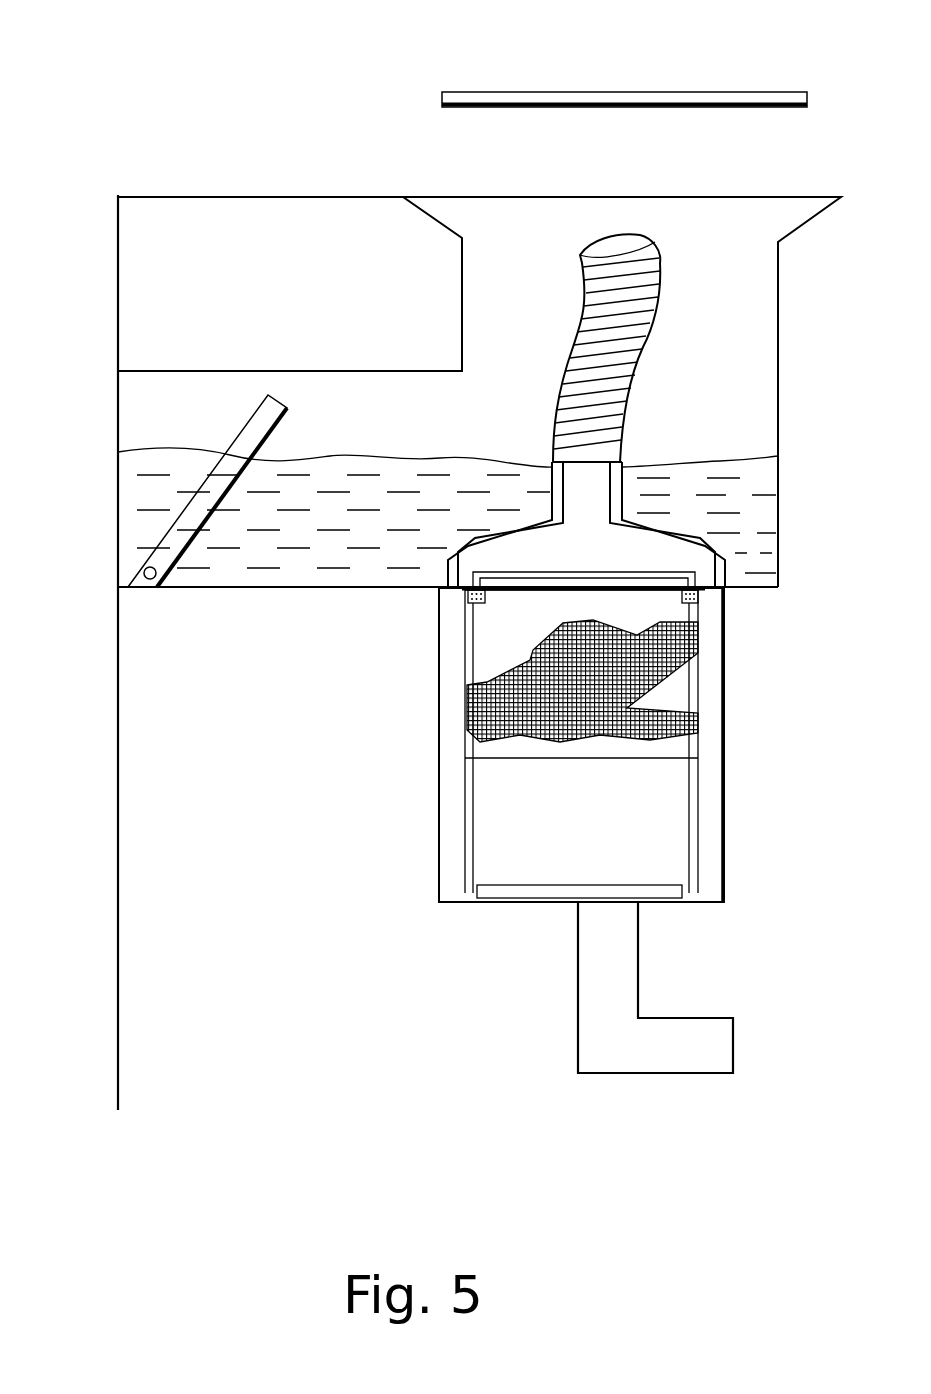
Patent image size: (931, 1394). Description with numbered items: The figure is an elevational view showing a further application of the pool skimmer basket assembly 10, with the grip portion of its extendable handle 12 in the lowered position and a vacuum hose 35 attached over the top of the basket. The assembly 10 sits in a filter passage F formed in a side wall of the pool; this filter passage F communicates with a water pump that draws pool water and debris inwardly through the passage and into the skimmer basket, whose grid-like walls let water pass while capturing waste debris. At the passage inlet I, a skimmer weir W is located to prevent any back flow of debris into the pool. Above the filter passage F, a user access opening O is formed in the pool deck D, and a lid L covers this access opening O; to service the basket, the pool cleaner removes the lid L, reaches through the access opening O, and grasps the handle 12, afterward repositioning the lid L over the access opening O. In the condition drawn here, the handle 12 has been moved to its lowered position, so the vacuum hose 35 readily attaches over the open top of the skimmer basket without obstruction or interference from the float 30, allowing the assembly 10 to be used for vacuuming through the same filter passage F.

The pool deck D is at (233, 196).
The user access opening O is at (463, 307).
The lid L is at (702, 93).
The skimmer weir W is at (207, 490).
The passage inlet I is at (121, 580).
The filter passage F is at (200, 583).
The vacuum hose 35 is at (630, 367).
The pool skimmer basket assembly 10 is at (400, 757).
The extendable handle 12 is at (735, 857).
The float 30 is at (540, 903).